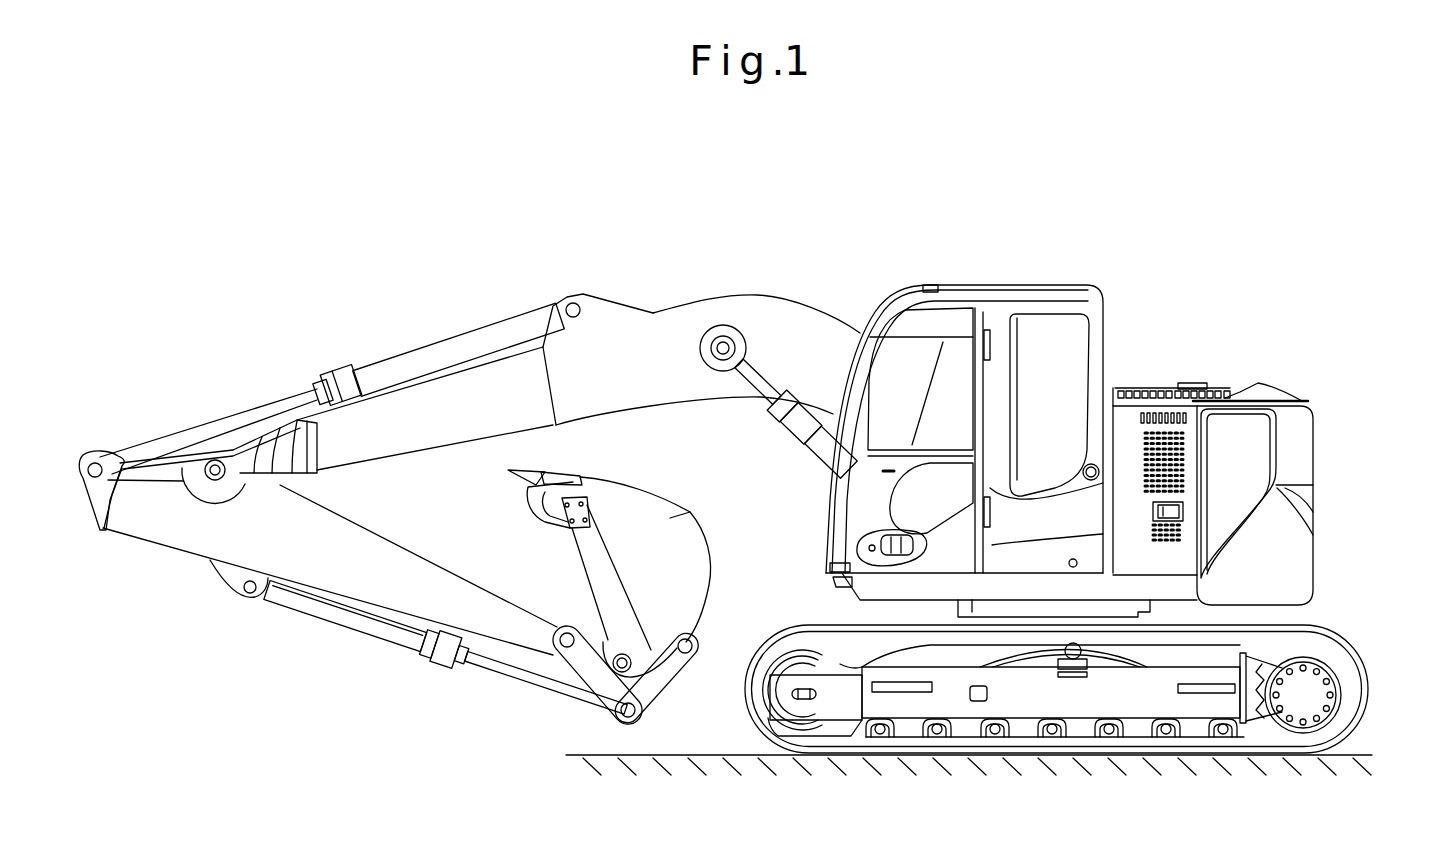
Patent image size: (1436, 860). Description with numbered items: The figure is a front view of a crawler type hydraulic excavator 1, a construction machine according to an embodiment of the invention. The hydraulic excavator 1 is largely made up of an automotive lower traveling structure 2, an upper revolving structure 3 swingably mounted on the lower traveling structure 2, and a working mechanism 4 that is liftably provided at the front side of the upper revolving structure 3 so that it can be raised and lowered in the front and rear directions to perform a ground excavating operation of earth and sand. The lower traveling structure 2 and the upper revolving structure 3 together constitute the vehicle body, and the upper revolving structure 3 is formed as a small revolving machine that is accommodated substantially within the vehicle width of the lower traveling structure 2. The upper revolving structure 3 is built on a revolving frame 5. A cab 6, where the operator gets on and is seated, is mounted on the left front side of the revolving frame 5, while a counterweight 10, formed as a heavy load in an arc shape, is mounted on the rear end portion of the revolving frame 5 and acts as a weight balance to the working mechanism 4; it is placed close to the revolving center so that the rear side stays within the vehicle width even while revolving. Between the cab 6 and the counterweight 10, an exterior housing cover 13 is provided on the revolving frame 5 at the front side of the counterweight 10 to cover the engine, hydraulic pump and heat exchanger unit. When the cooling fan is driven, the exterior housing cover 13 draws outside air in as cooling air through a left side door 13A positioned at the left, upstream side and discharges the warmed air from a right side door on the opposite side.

The hydraulic excavator 1 is at (913, 253).
The lower traveling structure 2 is at (1022, 705).
The upper revolving structure 3 is at (1101, 255).
The working mechanism 4 is at (693, 312).
The revolving frame 5 is at (903, 588).
The cab 6 is at (996, 287).
The counterweight 10 is at (1260, 569).
The exterior housing cover 13 is at (1160, 406).
The left side door 13A is at (1187, 497).